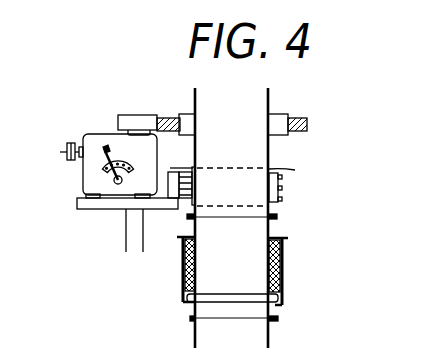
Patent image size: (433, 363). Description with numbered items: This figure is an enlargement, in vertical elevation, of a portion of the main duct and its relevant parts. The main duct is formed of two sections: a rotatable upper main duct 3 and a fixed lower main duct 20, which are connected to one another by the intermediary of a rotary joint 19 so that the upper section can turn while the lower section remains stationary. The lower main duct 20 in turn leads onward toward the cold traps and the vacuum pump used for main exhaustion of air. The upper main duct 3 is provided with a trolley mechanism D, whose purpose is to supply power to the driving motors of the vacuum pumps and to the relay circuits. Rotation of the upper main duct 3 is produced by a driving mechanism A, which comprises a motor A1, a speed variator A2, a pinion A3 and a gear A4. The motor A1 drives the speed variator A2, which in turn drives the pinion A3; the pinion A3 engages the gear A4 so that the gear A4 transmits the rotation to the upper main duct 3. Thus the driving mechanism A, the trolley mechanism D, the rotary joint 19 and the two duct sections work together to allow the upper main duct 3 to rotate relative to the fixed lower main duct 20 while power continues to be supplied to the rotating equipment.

The driving mechanism A is at (80, 128).
The motor A1 is at (62, 153).
The speed variator A2 is at (107, 135).
The pinion A3 is at (133, 115).
The gear A4 is at (308, 124).
The trolley mechanism D is at (184, 200).
The upper main duct 3 is at (269, 155).
The rotary joint 19 is at (269, 228).
The lower main duct 20 is at (269, 340).